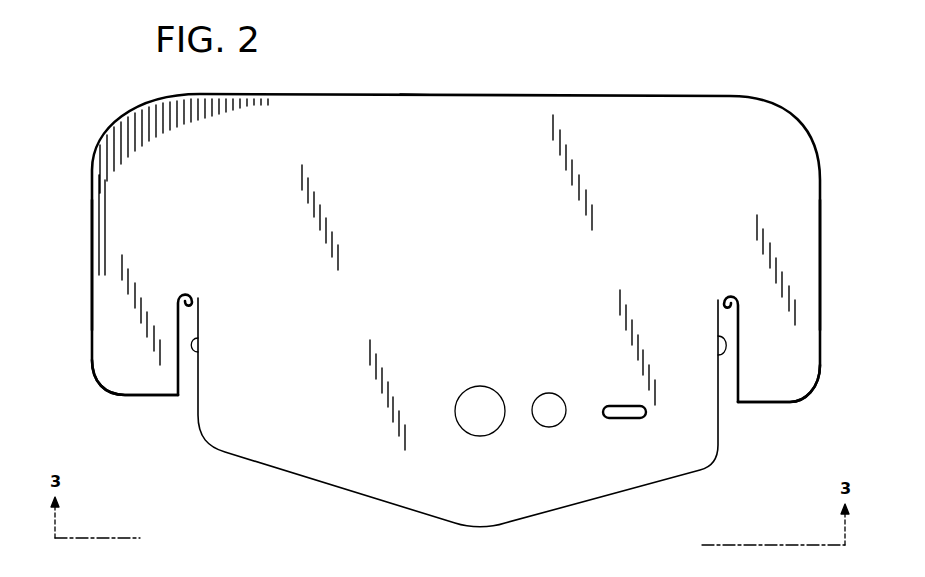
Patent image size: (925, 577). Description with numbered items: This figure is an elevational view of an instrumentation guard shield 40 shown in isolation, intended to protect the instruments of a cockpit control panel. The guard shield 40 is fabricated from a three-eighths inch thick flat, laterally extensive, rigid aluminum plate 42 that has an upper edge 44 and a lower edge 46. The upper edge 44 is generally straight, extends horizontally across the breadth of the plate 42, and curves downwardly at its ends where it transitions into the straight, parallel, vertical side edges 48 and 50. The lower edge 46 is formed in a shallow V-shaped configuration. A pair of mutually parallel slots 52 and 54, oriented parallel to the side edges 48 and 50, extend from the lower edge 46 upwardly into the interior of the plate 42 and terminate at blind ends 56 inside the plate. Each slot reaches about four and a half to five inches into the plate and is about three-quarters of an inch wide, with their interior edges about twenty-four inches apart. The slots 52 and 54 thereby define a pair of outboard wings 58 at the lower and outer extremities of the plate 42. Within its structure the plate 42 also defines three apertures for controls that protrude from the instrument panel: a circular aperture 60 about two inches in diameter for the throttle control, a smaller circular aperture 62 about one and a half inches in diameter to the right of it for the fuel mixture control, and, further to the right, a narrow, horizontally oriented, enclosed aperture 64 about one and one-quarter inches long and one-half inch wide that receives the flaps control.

The instrumentation guard shield 40 is at (763, 85).
The aluminum plate 42 is at (515, 130).
The upper edge 44 is at (420, 93).
The lower edge 46 is at (397, 508).
The side edge 48 is at (92, 276).
The side edge 50 is at (822, 283).
The slot 52 is at (198, 338).
The slot 54 is at (718, 338).
The blind end 56 is at (192, 298).
The outboard wing 58 is at (115, 350).
The circular aperture 60 is at (460, 392).
The circular aperture 62 is at (537, 391).
The enclosed aperture 64 is at (620, 406).